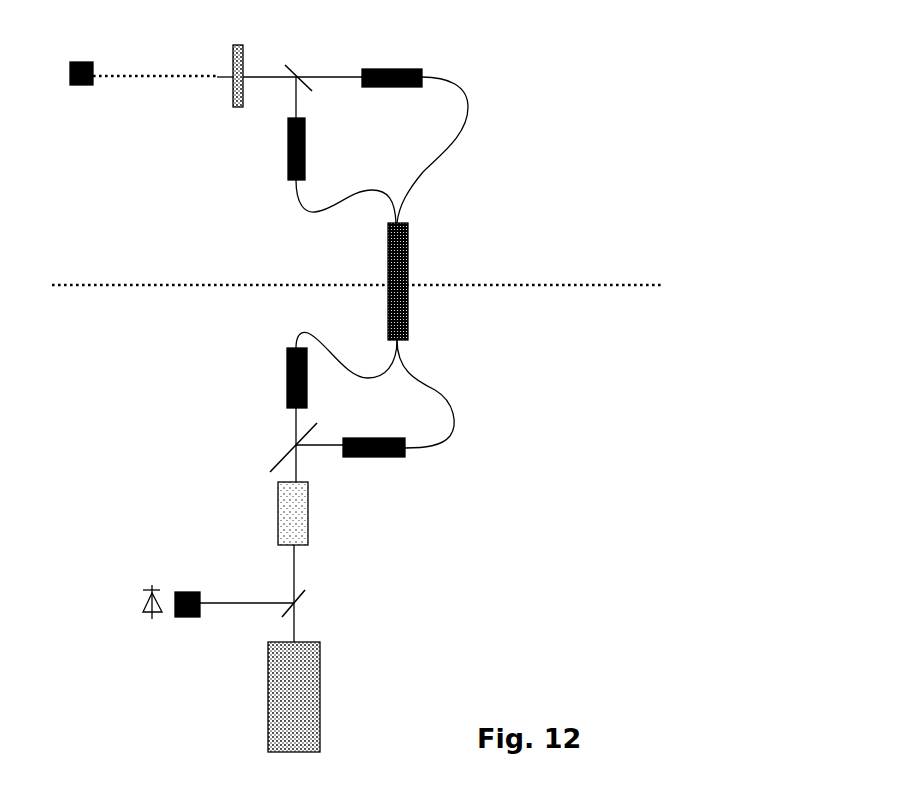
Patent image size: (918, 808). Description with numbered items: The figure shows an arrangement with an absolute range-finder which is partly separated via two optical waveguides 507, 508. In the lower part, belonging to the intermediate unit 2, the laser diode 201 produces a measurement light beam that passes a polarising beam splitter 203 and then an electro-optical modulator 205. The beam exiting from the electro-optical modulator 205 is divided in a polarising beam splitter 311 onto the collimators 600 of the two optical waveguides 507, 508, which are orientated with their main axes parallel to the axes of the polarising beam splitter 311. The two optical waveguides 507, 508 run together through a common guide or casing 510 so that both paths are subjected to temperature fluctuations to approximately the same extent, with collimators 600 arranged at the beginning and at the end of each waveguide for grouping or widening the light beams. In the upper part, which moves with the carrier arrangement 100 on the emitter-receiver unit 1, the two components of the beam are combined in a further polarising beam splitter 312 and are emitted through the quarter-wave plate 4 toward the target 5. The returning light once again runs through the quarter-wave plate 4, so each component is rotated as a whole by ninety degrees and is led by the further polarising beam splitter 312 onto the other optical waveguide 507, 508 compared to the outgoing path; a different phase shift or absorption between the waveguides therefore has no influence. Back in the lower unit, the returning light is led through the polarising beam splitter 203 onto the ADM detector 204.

The emitter-receiver unit 1 is at (62, 253).
The intermediate unit 2 is at (62, 347).
The quarter-wave plate 4 is at (238, 110).
The target 5 is at (68, 71).
The carrier arrangement 100 is at (159, 201).
The laser diode 201 is at (320, 694).
The polarising beam splitter 203 is at (307, 601).
The ADM detector 204 is at (192, 592).
The electro-optical modulator 205 is at (308, 517).
The polarising beam splitter 311 is at (290, 445).
The further polarising beam splitter 312 is at (293, 62).
The optical waveguide 507 is at (345, 197).
The optical waveguide 508 is at (433, 153).
The common guide or casing 510 is at (410, 245).
The collimators 600 is at (412, 66).